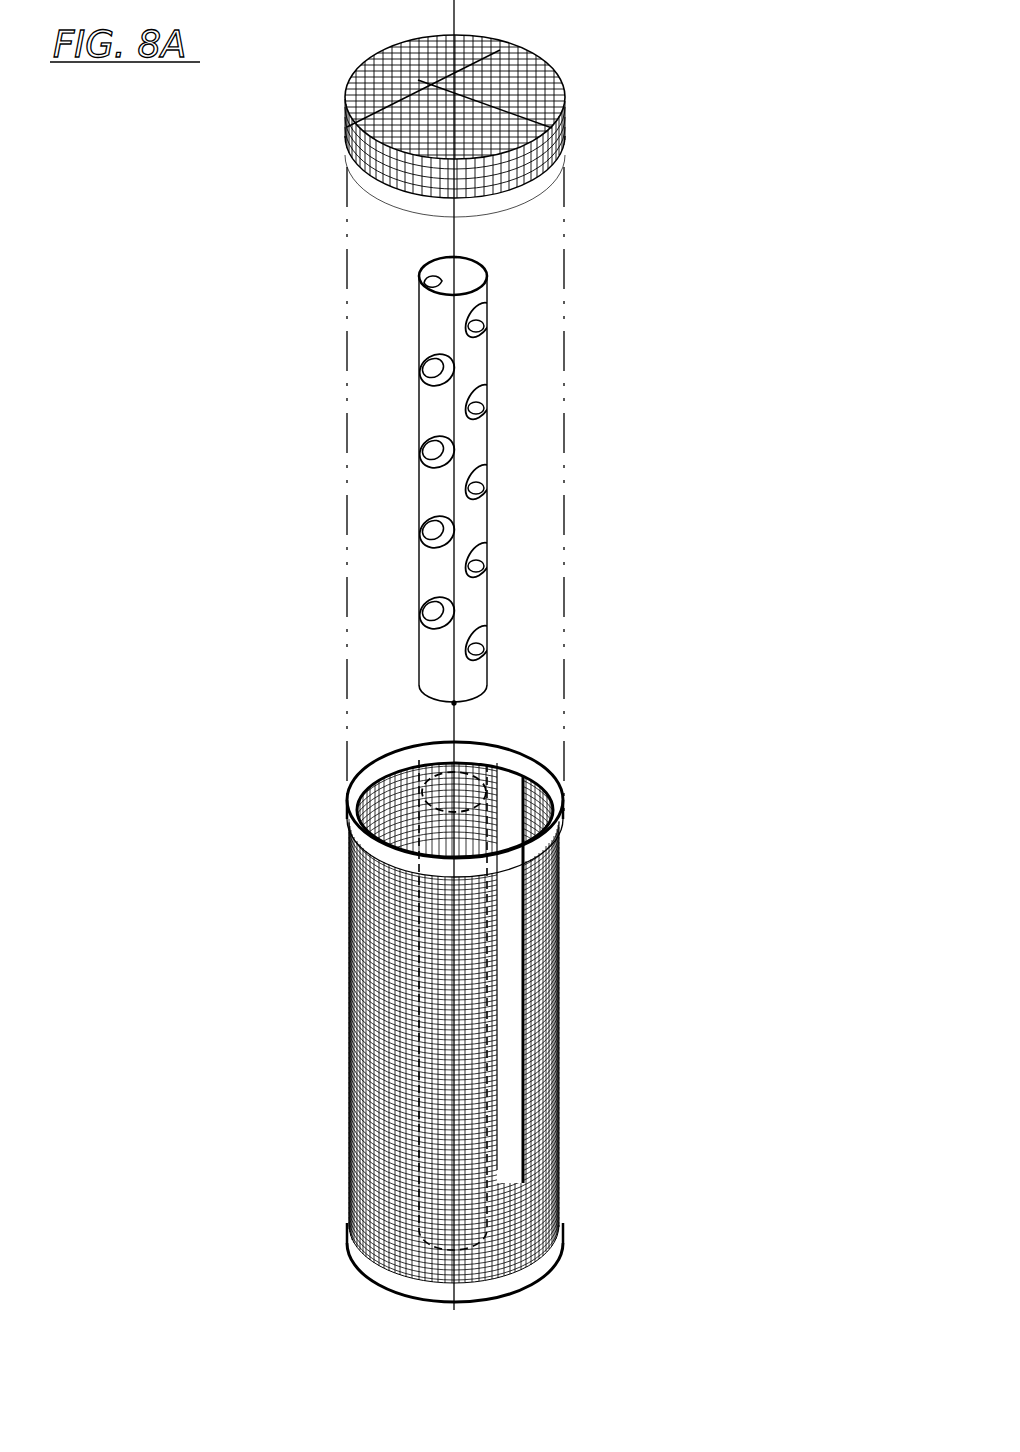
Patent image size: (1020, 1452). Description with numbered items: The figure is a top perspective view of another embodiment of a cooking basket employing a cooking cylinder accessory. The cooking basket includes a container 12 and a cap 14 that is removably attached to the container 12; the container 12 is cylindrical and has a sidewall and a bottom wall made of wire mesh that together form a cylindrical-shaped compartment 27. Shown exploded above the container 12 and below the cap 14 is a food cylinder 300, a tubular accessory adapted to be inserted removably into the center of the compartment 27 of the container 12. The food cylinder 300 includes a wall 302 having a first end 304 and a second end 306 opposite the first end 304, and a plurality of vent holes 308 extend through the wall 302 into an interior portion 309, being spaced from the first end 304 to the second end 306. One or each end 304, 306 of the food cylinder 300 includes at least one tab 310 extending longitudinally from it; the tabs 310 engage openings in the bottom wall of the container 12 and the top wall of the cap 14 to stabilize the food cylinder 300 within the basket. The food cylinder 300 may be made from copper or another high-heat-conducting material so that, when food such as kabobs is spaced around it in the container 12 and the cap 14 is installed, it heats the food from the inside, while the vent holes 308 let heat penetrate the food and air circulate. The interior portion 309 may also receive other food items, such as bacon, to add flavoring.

The container 12 is at (508, 1010).
The cap 14 is at (535, 60).
The compartment 27 is at (503, 817).
The food cylinder 300 is at (438, 459).
The wall 302 is at (442, 332).
The first end 304 is at (473, 258).
The second end 306 is at (480, 695).
The vent holes 308 is at (433, 453).
The interior portion 309 is at (470, 272).
The tab 310 is at (453, 257).